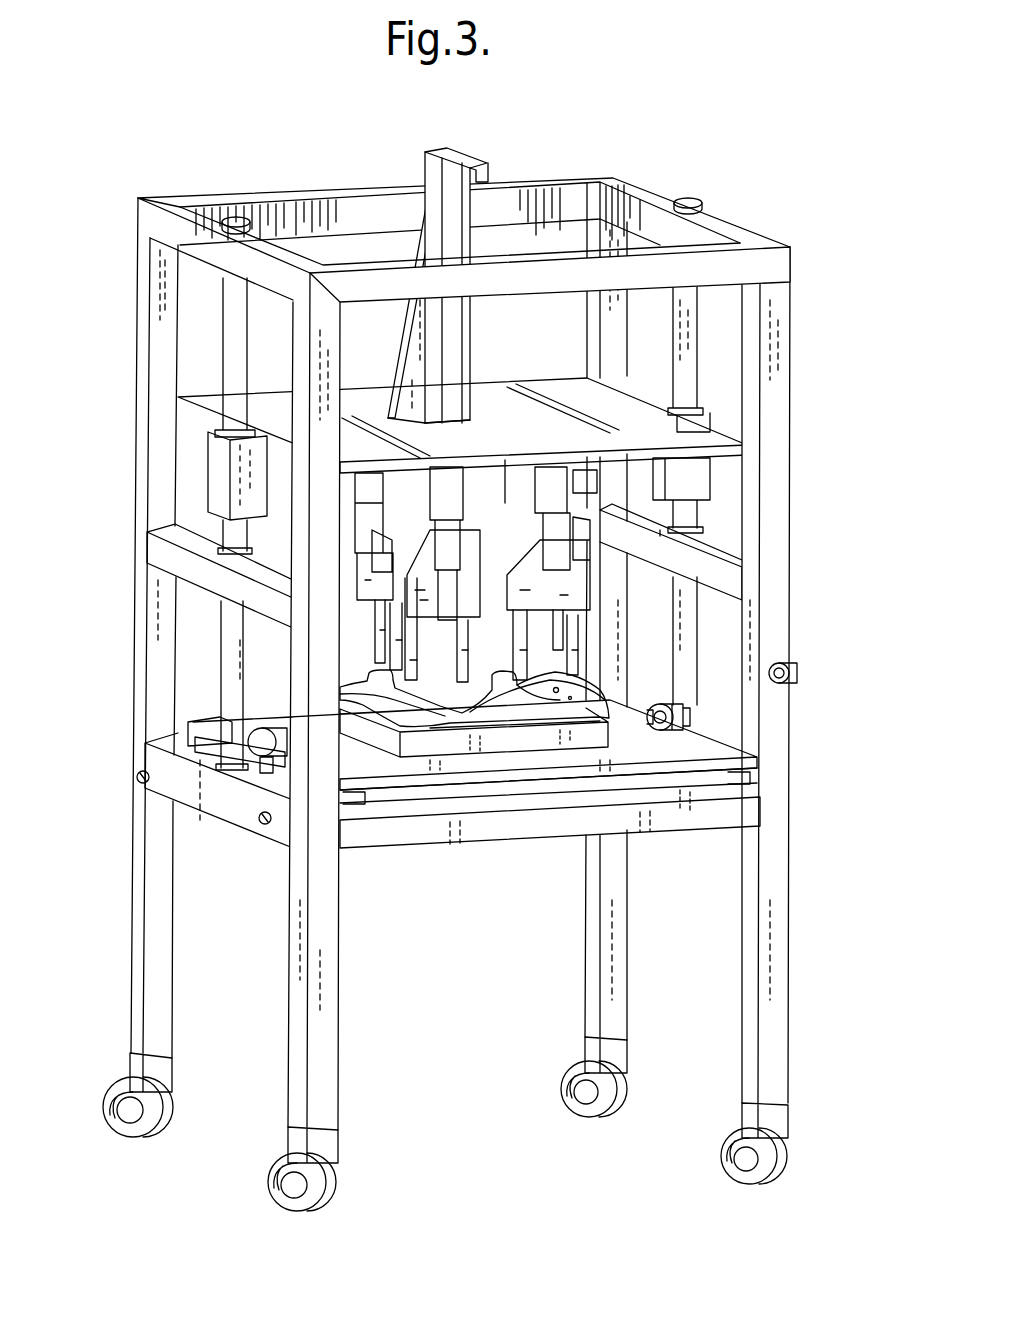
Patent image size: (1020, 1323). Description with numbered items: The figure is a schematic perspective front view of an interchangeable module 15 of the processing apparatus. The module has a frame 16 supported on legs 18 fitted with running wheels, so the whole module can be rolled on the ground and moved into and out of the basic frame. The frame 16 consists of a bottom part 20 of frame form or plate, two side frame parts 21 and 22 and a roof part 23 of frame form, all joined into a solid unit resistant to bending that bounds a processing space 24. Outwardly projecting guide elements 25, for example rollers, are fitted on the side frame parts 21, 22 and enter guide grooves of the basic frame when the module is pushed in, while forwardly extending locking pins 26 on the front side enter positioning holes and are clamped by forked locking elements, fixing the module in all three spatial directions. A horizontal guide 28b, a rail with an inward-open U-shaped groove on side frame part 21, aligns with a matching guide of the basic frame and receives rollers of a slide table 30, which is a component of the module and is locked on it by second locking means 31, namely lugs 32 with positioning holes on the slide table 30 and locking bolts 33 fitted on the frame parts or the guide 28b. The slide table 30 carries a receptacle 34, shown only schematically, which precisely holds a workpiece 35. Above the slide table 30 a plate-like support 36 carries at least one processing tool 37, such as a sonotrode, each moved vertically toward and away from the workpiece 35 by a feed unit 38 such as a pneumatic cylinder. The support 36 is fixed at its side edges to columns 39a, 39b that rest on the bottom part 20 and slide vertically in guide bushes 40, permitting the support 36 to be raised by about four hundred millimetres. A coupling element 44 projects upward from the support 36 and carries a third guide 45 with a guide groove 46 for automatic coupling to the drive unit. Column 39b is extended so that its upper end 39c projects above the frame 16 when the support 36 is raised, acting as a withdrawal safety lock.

The interchangeable module 15 is at (210, 182).
The frame 16 is at (136, 290).
The legs 18 is at (762, 977).
The bottom part 20 is at (178, 750).
The side frame part 21 is at (165, 488).
The side frame part 22 is at (782, 583).
The roof part 23 is at (633, 210).
The processing space 24 is at (507, 460).
The guide elements 25 is at (138, 782).
The locking pins 26 is at (791, 670).
The guide 28b is at (342, 803).
The slide table 30 is at (645, 752).
The second locking means 31 is at (262, 726).
The lugs 32 is at (672, 705).
The locking bolts 33 is at (655, 705).
The receptacle 34 is at (412, 745).
The workpiece 35 is at (533, 700).
The support 36 is at (682, 437).
The processing tool 37 is at (412, 662).
The feed unit 38 is at (558, 552).
The column 39a is at (240, 375).
The column 39b is at (683, 377).
The upper end of column 39c is at (689, 198).
The guide bushes 40 is at (237, 220).
The coupling element 44 is at (437, 230).
The third guide 45 is at (463, 152).
The guide groove 46 is at (486, 178).